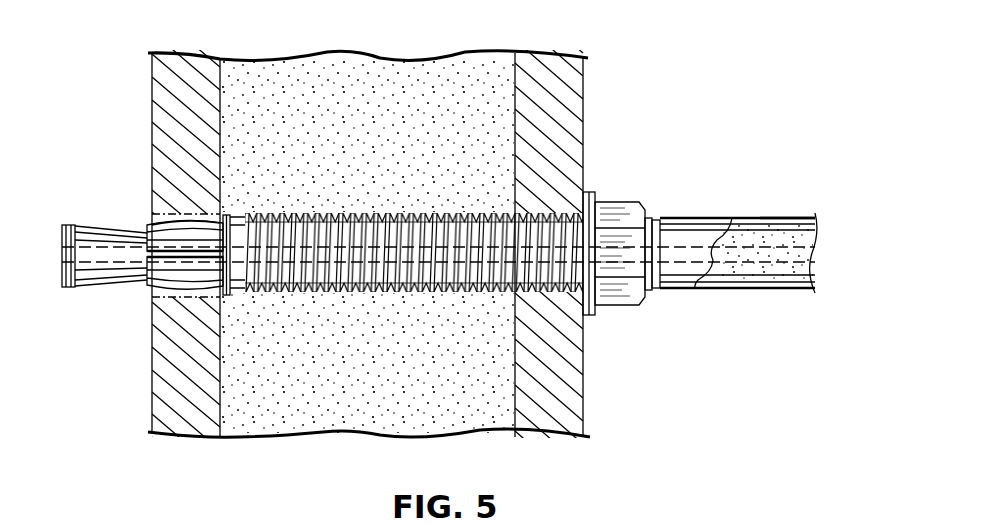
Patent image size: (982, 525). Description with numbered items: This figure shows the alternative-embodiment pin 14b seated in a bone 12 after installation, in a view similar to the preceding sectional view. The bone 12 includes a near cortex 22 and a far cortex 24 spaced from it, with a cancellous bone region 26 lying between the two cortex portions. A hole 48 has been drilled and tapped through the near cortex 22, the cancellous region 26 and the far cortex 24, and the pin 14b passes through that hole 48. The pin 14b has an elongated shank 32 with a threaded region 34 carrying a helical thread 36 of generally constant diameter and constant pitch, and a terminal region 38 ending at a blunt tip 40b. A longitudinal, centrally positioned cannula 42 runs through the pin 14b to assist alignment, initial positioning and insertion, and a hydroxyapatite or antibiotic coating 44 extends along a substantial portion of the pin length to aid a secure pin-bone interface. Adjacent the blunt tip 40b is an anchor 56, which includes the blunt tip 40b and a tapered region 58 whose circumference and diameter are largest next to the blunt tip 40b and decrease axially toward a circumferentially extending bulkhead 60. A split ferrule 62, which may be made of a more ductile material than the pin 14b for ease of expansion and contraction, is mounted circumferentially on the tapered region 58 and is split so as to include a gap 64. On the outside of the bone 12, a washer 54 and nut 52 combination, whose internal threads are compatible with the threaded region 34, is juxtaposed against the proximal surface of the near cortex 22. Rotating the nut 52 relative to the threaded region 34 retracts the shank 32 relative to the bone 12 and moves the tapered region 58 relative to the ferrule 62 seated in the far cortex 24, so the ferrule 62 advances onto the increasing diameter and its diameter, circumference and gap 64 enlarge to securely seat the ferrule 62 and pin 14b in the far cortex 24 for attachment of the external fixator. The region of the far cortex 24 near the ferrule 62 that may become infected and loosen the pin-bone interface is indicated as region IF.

The bone 12 is at (590, 94).
The pin 14b is at (787, 216).
The near cortex 22 is at (545, 63).
The far cortex 24 is at (186, 60).
The cancellous bone region 26 is at (368, 152).
The shank 32 is at (780, 290).
The threaded region 34 is at (453, 310).
The helical thread 36 is at (427, 215).
The terminal region 38 is at (82, 168).
The blunt tip 40b is at (62, 240).
The cannula 42 is at (818, 256).
The hydroxyapatite coating 44 is at (737, 266).
The hole 48 is at (202, 218).
The nut 52 is at (630, 201).
The washer 54 is at (590, 316).
The anchor 56 is at (107, 300).
The tapered region 58 is at (93, 289).
The bulkhead 60 is at (226, 295).
The ferrule 62 is at (160, 293).
The gap 64 is at (167, 257).
The infected region IF is at (182, 215).